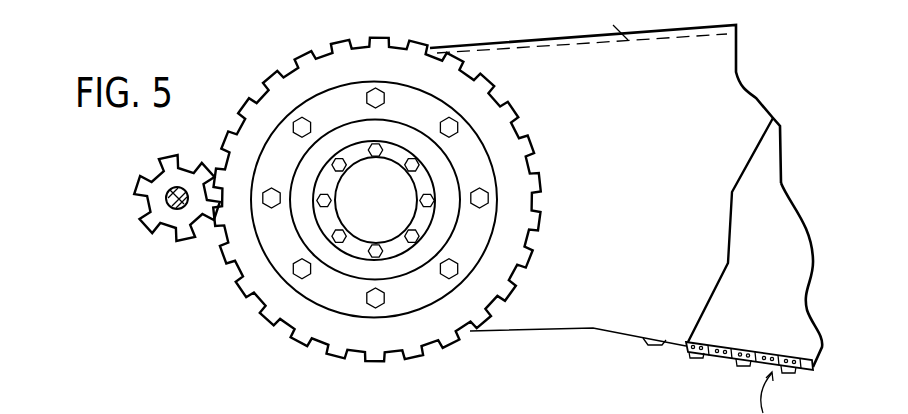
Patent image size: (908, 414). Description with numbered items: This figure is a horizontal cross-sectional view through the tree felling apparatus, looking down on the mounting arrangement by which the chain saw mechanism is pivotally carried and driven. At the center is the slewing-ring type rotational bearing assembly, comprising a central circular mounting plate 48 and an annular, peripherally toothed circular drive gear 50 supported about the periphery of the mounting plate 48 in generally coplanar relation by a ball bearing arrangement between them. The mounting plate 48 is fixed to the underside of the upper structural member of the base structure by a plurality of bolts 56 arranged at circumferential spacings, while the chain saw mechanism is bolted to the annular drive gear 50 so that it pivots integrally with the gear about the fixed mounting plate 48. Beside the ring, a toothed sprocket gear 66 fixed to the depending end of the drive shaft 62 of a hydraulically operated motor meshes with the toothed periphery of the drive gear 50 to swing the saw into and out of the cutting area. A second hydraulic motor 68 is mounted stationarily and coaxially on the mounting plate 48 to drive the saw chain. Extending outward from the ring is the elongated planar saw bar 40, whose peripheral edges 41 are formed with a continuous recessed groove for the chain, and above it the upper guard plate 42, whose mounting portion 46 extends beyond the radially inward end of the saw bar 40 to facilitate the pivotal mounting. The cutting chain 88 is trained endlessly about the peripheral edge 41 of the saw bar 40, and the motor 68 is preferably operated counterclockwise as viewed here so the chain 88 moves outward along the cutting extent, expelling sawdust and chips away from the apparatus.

The saw bar 40 is at (789, 267).
The peripheral edges of the saw bar 41 is at (622, 29).
The upper guard plate 42 is at (650, 187).
The mounting portion 46 is at (502, 320).
The mounting plate 48 is at (337, 300).
The drive gear 50 is at (268, 298).
The bolts 56 is at (481, 209).
The drive shaft 62 is at (168, 194).
The toothed sprocket gear 66 is at (150, 207).
The hydraulic motor 68 is at (390, 215).
The cutting chain 88 is at (720, 352).